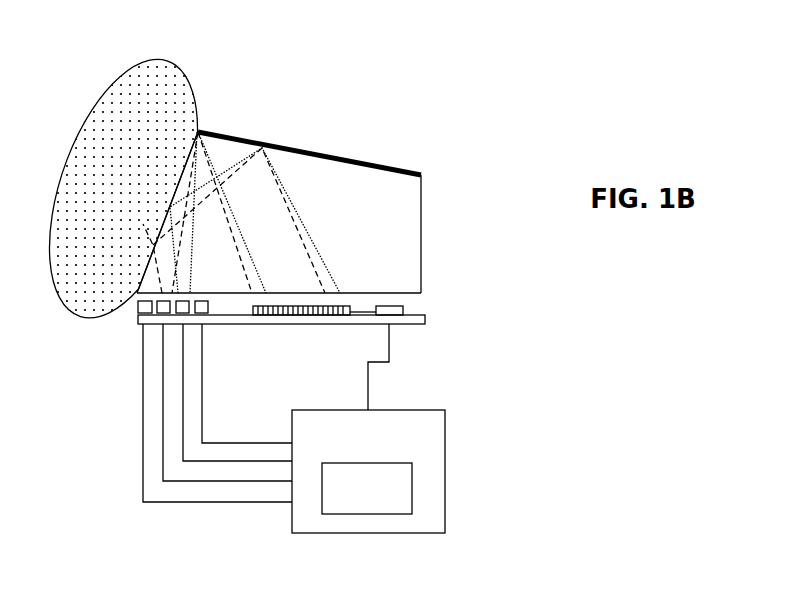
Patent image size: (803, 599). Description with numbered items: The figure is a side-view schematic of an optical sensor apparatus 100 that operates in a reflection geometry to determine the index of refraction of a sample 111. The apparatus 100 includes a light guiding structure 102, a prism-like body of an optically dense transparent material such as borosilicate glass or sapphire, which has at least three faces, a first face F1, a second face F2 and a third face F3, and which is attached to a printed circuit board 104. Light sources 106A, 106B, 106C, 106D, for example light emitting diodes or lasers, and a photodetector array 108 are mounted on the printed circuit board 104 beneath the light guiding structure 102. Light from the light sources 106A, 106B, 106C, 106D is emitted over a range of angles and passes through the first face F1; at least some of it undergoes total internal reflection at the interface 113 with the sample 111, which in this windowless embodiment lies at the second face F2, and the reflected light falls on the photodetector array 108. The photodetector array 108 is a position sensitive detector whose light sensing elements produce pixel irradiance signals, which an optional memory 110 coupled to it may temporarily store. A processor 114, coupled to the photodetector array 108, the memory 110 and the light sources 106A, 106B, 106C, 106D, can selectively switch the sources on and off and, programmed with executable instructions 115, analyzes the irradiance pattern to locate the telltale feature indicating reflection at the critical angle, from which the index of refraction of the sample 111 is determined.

The optical sensor apparatus 100 is at (412, 83).
The sample 111 is at (148, 157).
The interface 113 is at (178, 182).
The light guiding structure 102 is at (421, 240).
The printed circuit board 104 is at (425, 321).
The light source 106A is at (143, 311).
The light source 106B is at (163, 311).
The light source 106C is at (183, 311).
The light source 106D is at (202, 311).
The photodetector array 108 is at (300, 311).
The memory 110 is at (403, 309).
The processor 114 is at (445, 463).
The executable instructions 115 is at (368, 514).
The first face F1 is at (345, 292).
The second face F2 is at (134, 306).
The third face F3 is at (298, 150).